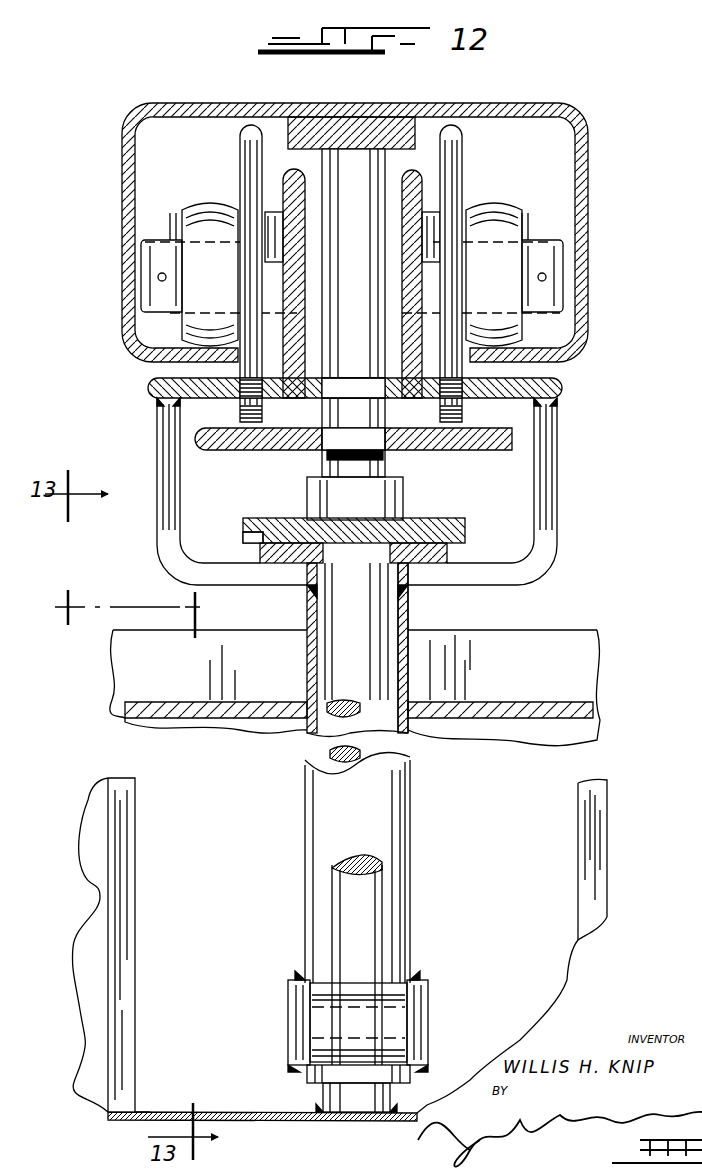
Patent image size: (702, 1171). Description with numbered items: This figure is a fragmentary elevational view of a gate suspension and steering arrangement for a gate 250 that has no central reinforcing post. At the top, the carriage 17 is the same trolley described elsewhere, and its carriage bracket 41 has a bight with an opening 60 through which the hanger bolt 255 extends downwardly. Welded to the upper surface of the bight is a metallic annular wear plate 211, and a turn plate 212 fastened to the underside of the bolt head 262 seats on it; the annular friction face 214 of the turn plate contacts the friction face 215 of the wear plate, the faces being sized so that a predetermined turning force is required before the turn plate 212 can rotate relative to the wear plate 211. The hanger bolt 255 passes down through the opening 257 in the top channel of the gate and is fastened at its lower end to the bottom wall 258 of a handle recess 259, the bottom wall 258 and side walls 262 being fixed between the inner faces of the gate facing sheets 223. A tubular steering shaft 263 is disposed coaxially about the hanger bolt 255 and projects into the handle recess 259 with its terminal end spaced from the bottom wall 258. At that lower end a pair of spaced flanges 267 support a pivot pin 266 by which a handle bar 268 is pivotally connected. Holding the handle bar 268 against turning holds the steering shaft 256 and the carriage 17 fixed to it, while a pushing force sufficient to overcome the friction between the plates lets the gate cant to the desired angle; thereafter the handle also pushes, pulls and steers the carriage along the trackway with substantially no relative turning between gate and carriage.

The carriage 17 is at (236, 198).
The carriage bracket 41 is at (167, 537).
The opening 60 is at (307, 592).
The annular wear plate 211 is at (273, 570).
The turn plate 212 is at (458, 529).
The annular friction face 214 is at (258, 540).
The friction face of wear plate 215 is at (450, 551).
The gate facing sheets 223 is at (88, 943).
The gate 250 is at (629, 828).
The hanger bolt 255 is at (373, 638).
The steering shaft 256 is at (323, 653).
The opening in top channel 257 is at (310, 716).
The bottom wall of handle recess 258 is at (290, 1121).
The handle recess 259 is at (147, 1090).
The side walls of handle recess / head of hanger bolt 262 is at (395, 493).
The tubular steering shaft 263 is at (410, 697).
The pivot pin 266 is at (420, 1026).
The spaced flanges 267 is at (293, 995).
The handle bar 268 is at (365, 943).